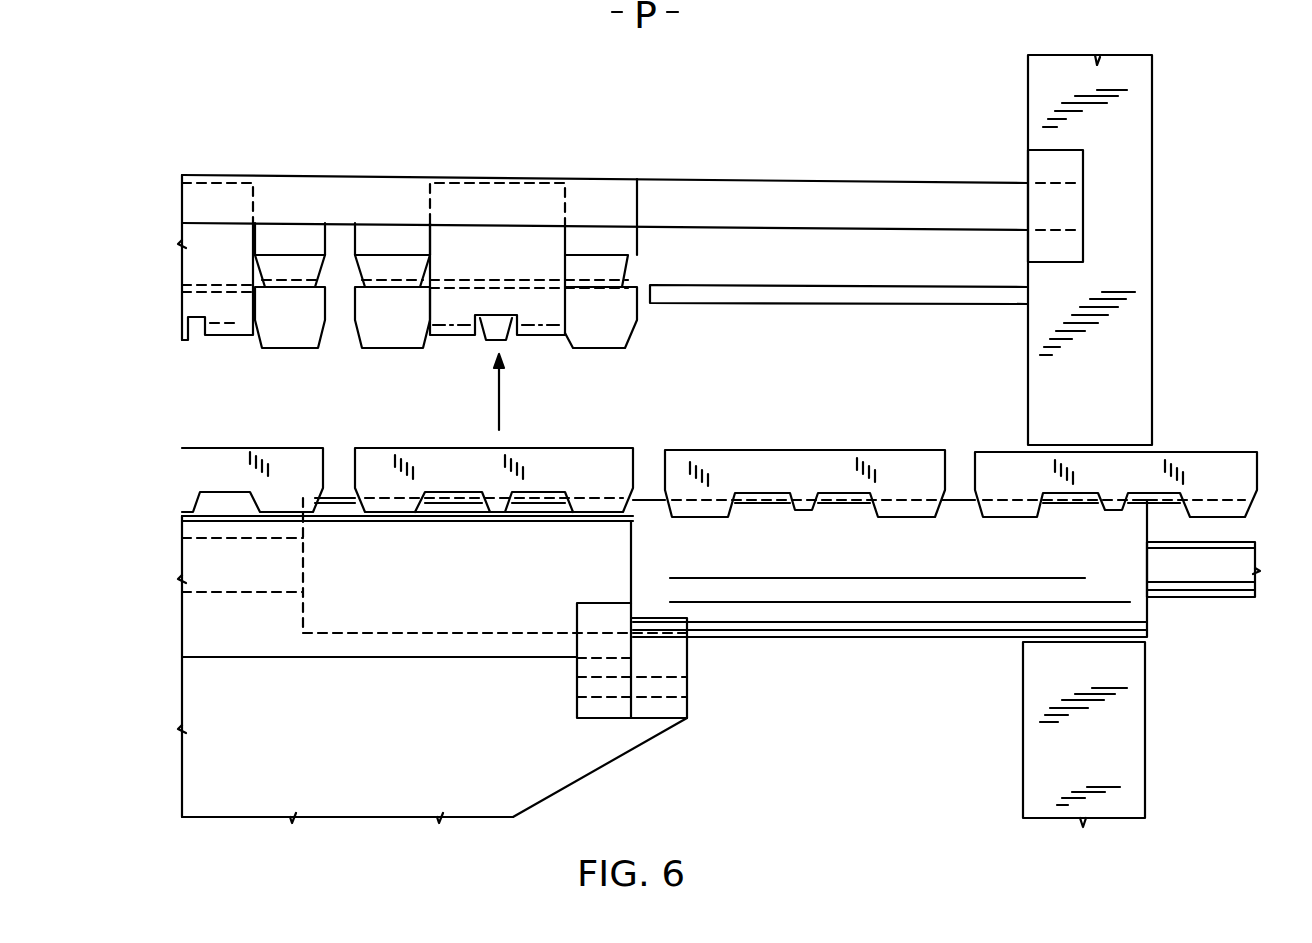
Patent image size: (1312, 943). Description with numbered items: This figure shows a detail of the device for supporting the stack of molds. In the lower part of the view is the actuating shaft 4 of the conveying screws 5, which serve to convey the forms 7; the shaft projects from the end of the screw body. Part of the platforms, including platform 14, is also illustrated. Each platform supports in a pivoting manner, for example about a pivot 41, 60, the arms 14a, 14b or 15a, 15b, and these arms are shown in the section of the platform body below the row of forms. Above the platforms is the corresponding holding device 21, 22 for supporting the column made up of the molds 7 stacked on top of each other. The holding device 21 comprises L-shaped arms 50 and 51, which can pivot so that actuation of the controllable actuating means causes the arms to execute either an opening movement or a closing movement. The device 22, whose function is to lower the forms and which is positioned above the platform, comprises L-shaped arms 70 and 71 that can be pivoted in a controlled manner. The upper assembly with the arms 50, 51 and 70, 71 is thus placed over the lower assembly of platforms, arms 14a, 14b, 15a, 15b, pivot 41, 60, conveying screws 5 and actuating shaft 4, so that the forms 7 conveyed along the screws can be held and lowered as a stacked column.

The L-shaped arm 50 is at (529, 205).
The L-shaped arm 51 is at (529, 261).
The L-shaped arm 70 is at (529, 261).
The L-shaped arm 71 is at (460, 253).
The holding device 21 is at (667, 250).
The holding device 22 is at (615, 203).
The mold 7 is at (608, 318).
The arm 14a is at (432, 660).
The arm 14b is at (432, 660).
The arm 15a is at (432, 660).
The arm 15b is at (462, 595).
The platform 14 is at (451, 785).
The pivot 41 is at (698, 666).
The pivot 60 is at (668, 690).
The conveying screw 5 is at (865, 595).
The actuating shaft 4 is at (1217, 577).